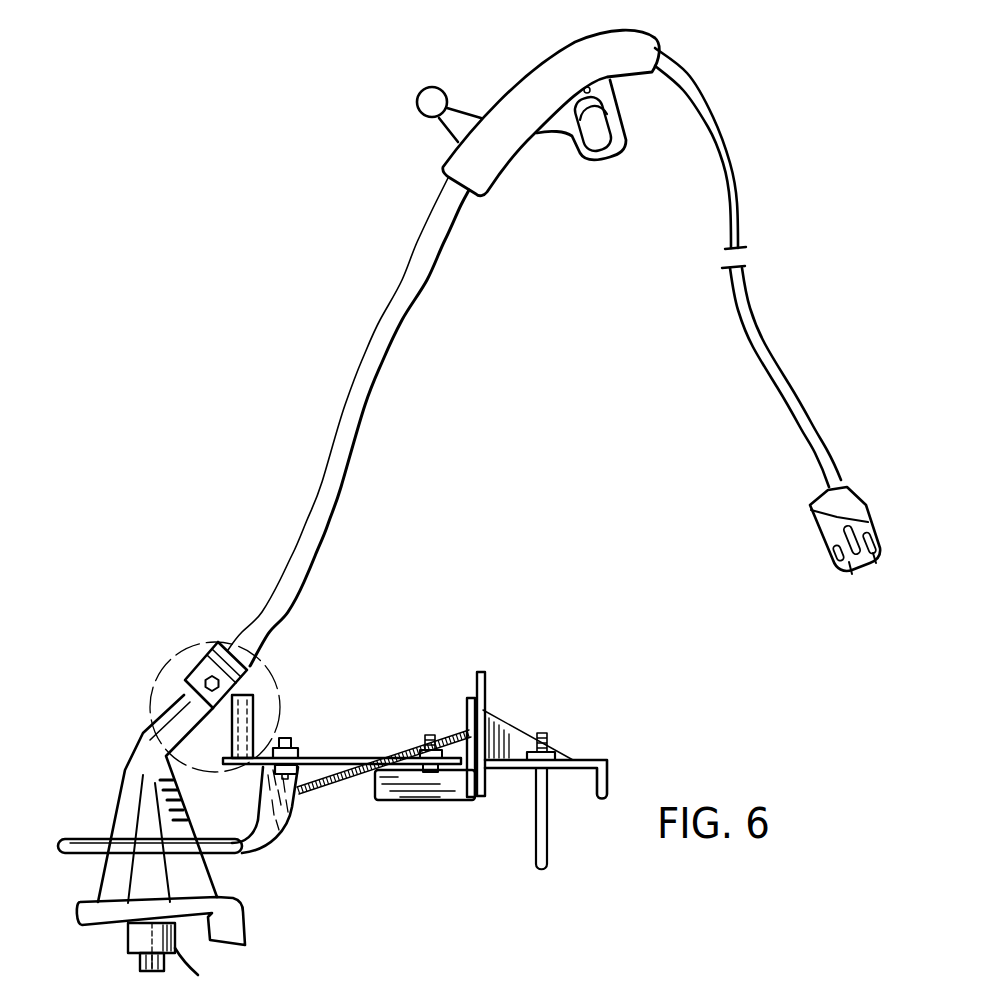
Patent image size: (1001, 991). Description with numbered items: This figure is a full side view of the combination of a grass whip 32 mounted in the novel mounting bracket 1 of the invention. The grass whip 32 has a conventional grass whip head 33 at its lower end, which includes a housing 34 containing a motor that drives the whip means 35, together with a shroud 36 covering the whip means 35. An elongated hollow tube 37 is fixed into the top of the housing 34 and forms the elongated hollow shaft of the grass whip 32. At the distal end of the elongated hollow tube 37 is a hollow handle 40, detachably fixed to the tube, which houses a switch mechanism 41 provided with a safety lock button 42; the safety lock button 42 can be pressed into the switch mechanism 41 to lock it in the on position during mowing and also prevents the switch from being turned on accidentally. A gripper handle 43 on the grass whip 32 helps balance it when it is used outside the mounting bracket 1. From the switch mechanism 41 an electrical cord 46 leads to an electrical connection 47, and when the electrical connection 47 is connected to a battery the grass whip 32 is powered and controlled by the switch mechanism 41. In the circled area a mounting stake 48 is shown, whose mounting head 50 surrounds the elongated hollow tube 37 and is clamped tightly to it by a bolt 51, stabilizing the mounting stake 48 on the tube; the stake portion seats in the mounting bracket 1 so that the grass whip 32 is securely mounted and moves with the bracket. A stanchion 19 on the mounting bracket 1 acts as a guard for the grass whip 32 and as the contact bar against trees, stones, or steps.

The mounting bracket 1 is at (433, 822).
The stanchion 19 is at (78, 840).
The grass whip 32 is at (318, 365).
The grass whip head 33 is at (240, 961).
The housing 34 is at (200, 877).
The whip means 35 is at (136, 938).
The shroud 36 is at (243, 913).
The elongated hollow tube 37 is at (367, 405).
The hollow handle 40 is at (518, 68).
The switch mechanism 41 is at (612, 90).
The safety lock button 42 is at (633, 52).
The gripper handle 43 is at (438, 86).
The electrical cord 46 is at (745, 291).
The electrical connection 47 is at (847, 498).
The mounting stake 48 is at (188, 663).
The mounting head 50 is at (423, 860).
The bolt 51 is at (205, 684).